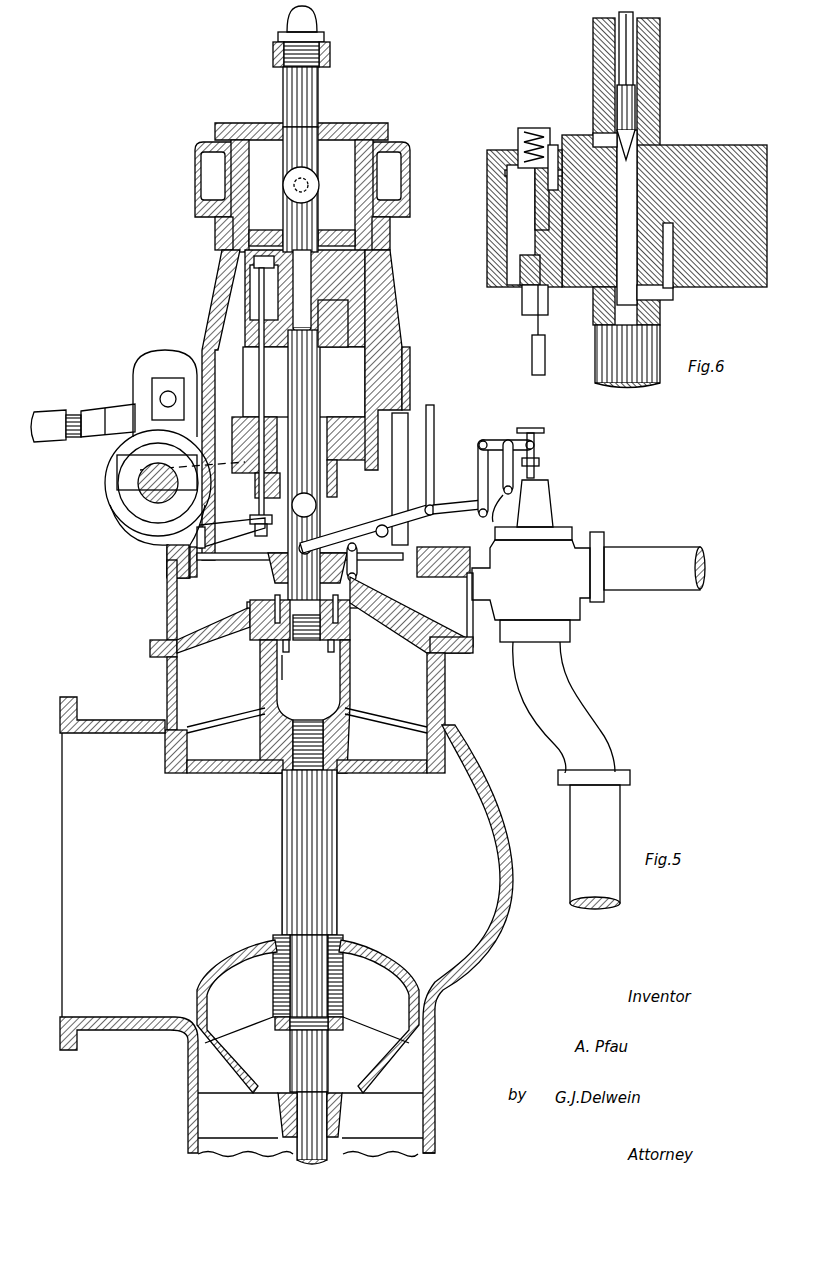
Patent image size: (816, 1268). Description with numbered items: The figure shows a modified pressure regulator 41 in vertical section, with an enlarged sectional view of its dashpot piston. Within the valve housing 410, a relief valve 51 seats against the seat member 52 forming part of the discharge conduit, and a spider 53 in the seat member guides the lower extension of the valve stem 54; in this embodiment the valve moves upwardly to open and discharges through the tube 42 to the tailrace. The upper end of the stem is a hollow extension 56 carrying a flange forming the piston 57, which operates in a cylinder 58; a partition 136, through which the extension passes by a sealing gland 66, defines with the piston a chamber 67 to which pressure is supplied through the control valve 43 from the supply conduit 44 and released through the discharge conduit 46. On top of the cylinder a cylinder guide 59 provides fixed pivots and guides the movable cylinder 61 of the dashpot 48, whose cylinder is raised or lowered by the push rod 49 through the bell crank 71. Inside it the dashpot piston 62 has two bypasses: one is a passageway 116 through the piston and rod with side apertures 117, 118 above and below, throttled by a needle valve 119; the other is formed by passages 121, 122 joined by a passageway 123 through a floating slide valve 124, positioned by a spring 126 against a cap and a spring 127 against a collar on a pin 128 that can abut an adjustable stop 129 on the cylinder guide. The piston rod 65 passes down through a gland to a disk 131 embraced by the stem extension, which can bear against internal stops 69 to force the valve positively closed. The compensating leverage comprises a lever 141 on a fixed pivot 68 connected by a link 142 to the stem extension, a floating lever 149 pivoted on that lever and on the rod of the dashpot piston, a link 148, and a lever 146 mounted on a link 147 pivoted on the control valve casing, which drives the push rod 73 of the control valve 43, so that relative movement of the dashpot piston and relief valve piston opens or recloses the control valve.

In FIG. 5, the regulator 41 is at (182, 873).
In FIG. 5, the tube 42 is at (436, 1150).
In FIG. 5, the control valve 43 is at (546, 606).
In FIG. 5, the conduit 44 is at (651, 547).
In FIG. 5, the conduit 46 is at (612, 735).
In FIG. 5, the dashpot 48 is at (204, 286).
In FIG. 5, the push rod 49 is at (58, 410).
In FIG. 5, the relief valve 51 is at (388, 967).
In FIG. 5, the seat member 52 is at (188, 1088).
In FIG. 5, the spider 53 is at (395, 1093).
In FIG. 5, the valve stem 54 is at (338, 894).
In FIG. 5, the hollow extension 56 is at (342, 690).
In FIG. 5, the piston 57 is at (228, 772).
In FIG. 5, the cylinder 58 is at (165, 688).
In FIG. 5, the cylinder guide 59 is at (406, 392).
In FIG. 5, the dashpot cylinder 61 is at (378, 460).
In FIG. 5, the dashpot piston 62 is at (330, 346).
In FIG. 6, the dashpot piston 62 is at (733, 147).
In FIG. 5, the piston rod 65 is at (320, 395).
In FIG. 6, the piston rod 65 is at (600, 370).
In FIG. 5, the sealing gland 66 is at (256, 604).
In FIG. 5, the chamber 67 is at (432, 692).
In FIG. 5, the fixed pivot 68 is at (440, 508).
In FIG. 5, the internal stops 69 is at (292, 674).
In FIG. 5, the bell crank 71 is at (172, 352).
In FIG. 5, the push rod 73 is at (538, 470).
In FIG. 6, the passageway 116 is at (617, 292).
In FIG. 6, the side aperture 117 is at (598, 133).
In FIG. 6, the side aperture 118 is at (660, 297).
In FIG. 6, the needle valve 119 is at (632, 143).
In FIG. 6, the passage 121 is at (570, 150).
In FIG. 6, the passage 122 is at (672, 280).
In FIG. 6, the passageway 123 is at (535, 213).
In FIG. 6, the floating slide valve 124 is at (528, 172).
In FIG. 6, the spring 126 is at (518, 132).
In FIG. 6, the spring 127 is at (522, 298).
In FIG. 6, the pin 128 is at (537, 325).
In FIG. 5, the adjustable stop 129 is at (262, 516).
In FIG. 6, the adjustable stop 129 is at (532, 358).
In FIG. 5, the disk 131 is at (330, 650).
In FIG. 5, the partition 136 is at (207, 636).
In FIG. 5, the lever 141 is at (430, 505).
In FIG. 5, the link 142 is at (357, 560).
In FIG. 5, the lever 146 is at (496, 442).
In FIG. 5, the link 147 is at (494, 520).
In FIG. 5, the link 148 is at (478, 463).
In FIG. 5, the floating lever 149 is at (350, 535).
In FIG. 5, the valve housing 410 is at (510, 935).